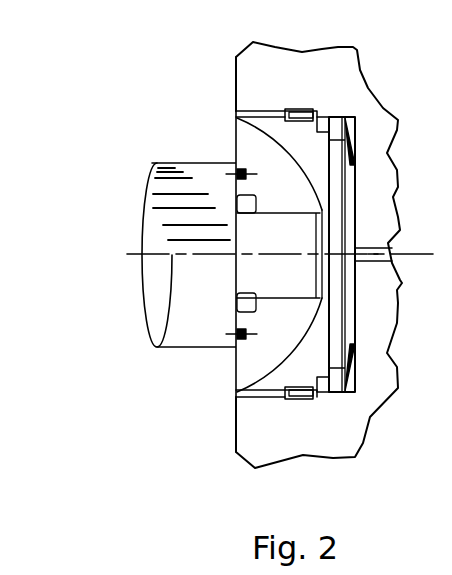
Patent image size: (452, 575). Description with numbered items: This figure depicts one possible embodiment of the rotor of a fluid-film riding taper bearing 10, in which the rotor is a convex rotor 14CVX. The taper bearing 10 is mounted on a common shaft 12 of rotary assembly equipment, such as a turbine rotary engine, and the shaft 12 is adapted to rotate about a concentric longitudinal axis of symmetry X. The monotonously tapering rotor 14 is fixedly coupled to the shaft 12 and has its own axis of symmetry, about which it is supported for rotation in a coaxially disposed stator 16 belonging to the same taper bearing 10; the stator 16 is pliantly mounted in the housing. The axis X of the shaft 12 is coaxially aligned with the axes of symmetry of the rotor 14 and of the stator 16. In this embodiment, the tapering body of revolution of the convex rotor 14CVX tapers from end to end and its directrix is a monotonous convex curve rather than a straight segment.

The taper bearing 10 is at (200, 70).
The shaft 12 is at (147, 163).
The rotor 14 is at (290, 208).
The convex rotor 14CVX is at (255, 152).
The stator 16 is at (272, 377).
The axis of symmetry X is at (138, 250).